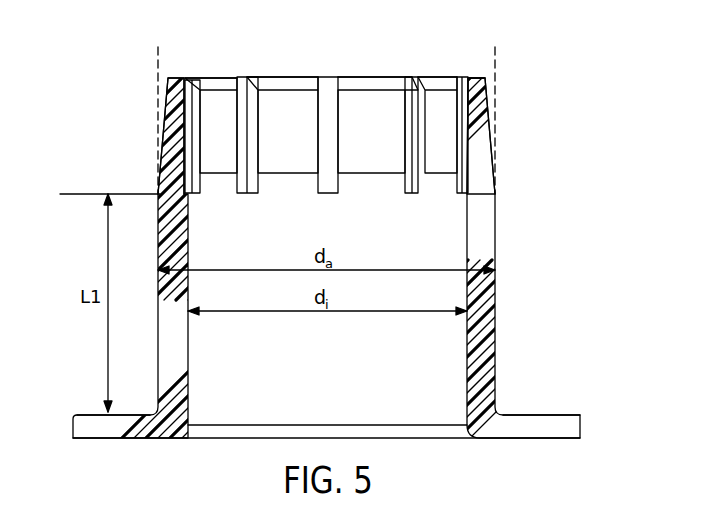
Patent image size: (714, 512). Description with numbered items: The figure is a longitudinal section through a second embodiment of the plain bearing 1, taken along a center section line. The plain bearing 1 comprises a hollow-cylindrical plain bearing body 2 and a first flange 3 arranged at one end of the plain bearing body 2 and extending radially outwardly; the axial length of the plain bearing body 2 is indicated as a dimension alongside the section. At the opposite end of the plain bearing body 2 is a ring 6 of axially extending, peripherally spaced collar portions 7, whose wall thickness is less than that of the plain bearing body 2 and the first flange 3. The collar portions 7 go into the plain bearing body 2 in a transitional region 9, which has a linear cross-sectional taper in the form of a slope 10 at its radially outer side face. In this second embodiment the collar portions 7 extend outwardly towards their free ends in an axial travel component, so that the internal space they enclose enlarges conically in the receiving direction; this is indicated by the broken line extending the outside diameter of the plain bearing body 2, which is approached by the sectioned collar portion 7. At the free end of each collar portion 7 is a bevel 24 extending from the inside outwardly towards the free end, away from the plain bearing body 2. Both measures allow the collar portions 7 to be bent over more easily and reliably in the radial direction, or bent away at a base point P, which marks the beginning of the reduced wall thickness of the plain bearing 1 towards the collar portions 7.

The plain bearing 1 is at (540, 40).
The plain bearing body 2 is at (493, 298).
The first flange 3 is at (535, 420).
The ring 6 is at (392, 68).
The collar portions 7 is at (225, 167).
The transitional region 9 is at (487, 193).
The slope 10 is at (473, 192).
The bevel 24 is at (278, 82).
The base point P is at (178, 172).